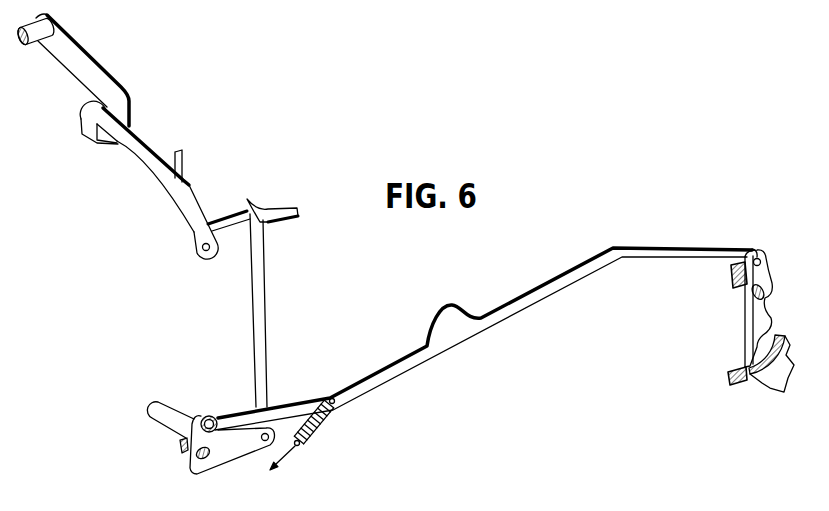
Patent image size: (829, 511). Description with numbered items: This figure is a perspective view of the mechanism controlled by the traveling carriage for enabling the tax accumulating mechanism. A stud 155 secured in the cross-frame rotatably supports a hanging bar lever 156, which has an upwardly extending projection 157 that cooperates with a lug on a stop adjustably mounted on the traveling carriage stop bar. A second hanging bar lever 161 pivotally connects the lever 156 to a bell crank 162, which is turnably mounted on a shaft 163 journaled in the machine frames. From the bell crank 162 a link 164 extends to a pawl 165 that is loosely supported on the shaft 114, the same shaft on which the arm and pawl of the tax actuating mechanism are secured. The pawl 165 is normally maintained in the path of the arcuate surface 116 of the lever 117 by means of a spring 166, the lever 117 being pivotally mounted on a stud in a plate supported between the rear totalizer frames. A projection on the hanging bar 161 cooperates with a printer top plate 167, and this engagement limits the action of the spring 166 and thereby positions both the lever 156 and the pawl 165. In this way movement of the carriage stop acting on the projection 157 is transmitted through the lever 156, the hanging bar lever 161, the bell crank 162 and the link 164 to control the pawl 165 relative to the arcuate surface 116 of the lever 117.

The stud 155 is at (44, 45).
The hanging bar lever 156 is at (88, 68).
The upwardly extending projection 157 is at (180, 152).
The printer top plate 167 is at (278, 209).
The hanging bar lever 161 is at (266, 268).
The shaft 163 is at (172, 404).
The bell crank 162 is at (222, 457).
The spring 166 is at (312, 426).
The link 164 is at (430, 352).
The shaft 114 is at (731, 275).
The pawl 165 is at (750, 313).
The arcuate surface 116 is at (728, 375).
The lever 117 is at (794, 347).